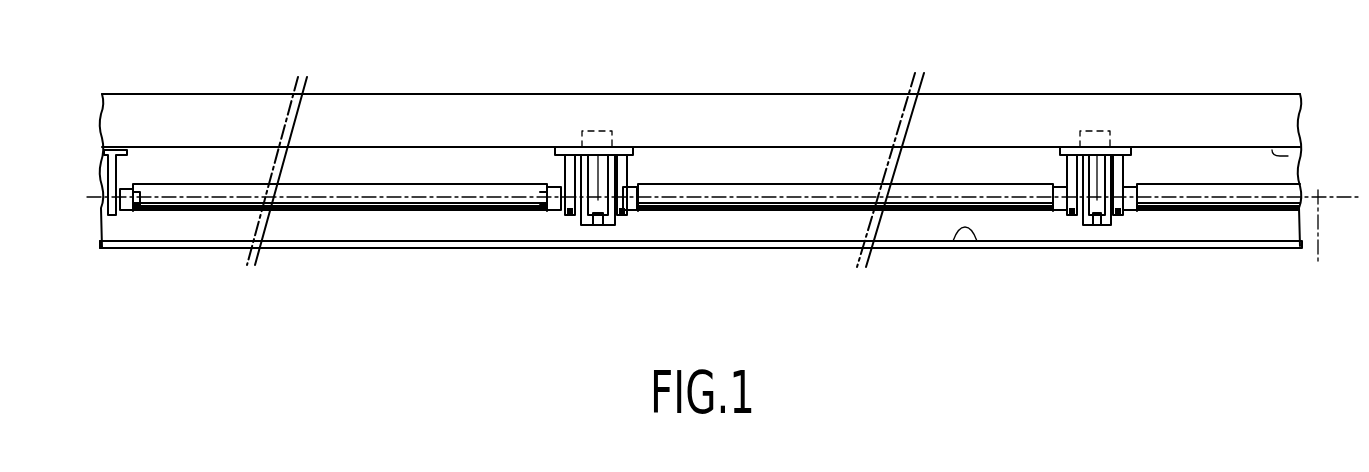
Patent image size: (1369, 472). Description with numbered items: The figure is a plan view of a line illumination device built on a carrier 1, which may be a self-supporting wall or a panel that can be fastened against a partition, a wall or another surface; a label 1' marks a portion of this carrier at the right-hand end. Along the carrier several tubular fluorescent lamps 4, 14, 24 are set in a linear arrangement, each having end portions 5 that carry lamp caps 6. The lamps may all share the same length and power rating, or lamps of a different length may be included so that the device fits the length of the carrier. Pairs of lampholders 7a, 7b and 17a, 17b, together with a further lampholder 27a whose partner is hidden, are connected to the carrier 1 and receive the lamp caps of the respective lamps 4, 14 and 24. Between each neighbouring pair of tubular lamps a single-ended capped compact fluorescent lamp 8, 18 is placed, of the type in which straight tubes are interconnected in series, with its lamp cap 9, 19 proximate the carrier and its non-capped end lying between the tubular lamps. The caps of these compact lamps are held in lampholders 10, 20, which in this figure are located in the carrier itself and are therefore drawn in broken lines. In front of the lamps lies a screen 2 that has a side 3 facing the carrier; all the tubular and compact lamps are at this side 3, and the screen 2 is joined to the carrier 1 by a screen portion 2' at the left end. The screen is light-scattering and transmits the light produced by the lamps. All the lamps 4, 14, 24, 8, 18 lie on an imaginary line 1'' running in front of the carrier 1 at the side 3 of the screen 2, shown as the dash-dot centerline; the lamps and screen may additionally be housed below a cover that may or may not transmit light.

The carrier 1 is at (701, 143).
The beam end portion 1' is at (1303, 131).
The imaginary line 1'' is at (1324, 244).
The screen 2 is at (701, 272).
The screen portion 2' is at (84, 214).
The side of the screen facing the carrier 3 is at (952, 242).
The tubular fluorescent lamp 4 is at (357, 205).
The end portion 5 is at (143, 212).
The lamp cap 6 is at (127, 212).
The lampholder 7a is at (114, 217).
The lampholder 7b is at (568, 216).
The compact fluorescent lamp 8 is at (596, 227).
The lamp cap 9 is at (603, 152).
The lampholder 10 is at (594, 130).
The tubular fluorescent lamp 14 is at (822, 205).
The lampholder 17a is at (622, 216).
The lampholder 17b is at (1070, 216).
The compact fluorescent lamp 18 is at (1087, 227).
The lamp cap 19 is at (1100, 152).
The lampholder 20 is at (1094, 130).
The tubular fluorescent lamp 24 is at (1197, 203).
The lampholder 27a is at (1118, 216).